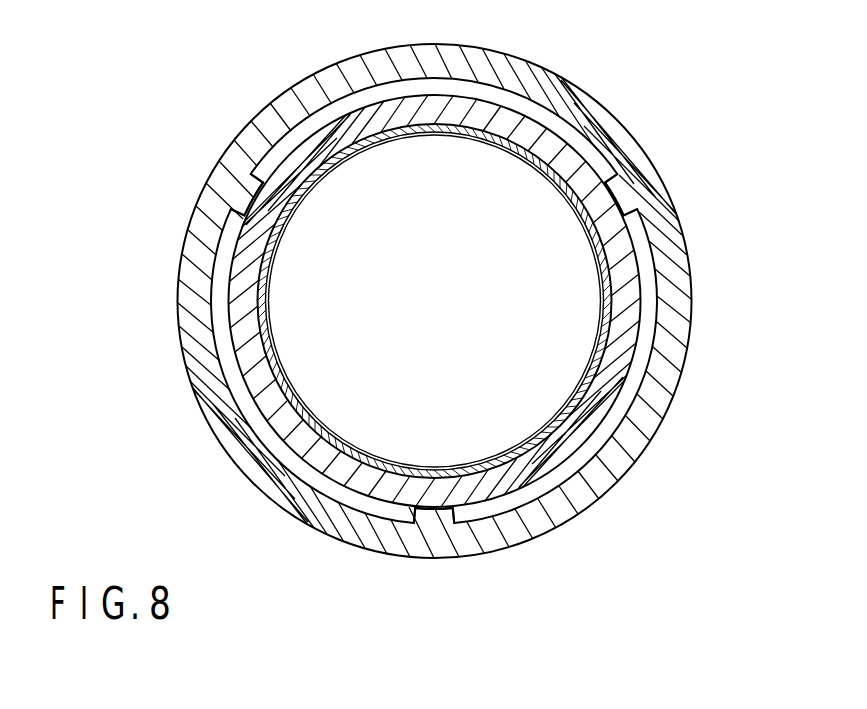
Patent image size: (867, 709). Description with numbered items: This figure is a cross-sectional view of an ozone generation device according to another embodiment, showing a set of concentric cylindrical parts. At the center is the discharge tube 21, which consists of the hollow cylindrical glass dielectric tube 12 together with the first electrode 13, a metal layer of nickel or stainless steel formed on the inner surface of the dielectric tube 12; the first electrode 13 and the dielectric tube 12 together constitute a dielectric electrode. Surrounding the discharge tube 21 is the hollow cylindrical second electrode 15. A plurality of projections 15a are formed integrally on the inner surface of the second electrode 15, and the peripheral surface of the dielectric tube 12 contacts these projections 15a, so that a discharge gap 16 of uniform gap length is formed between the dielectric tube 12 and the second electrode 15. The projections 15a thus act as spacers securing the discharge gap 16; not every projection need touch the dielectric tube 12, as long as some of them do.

The second electrode 15 is at (632, 166).
The projections 15a is at (233, 213).
The discharge gap 16 is at (241, 400).
The dielectric tube 12 is at (273, 353).
The first electrode 13 is at (283, 379).
The discharge tube 21 is at (434, 301).